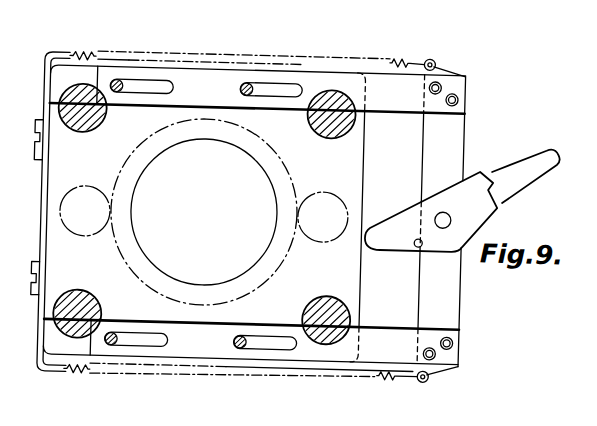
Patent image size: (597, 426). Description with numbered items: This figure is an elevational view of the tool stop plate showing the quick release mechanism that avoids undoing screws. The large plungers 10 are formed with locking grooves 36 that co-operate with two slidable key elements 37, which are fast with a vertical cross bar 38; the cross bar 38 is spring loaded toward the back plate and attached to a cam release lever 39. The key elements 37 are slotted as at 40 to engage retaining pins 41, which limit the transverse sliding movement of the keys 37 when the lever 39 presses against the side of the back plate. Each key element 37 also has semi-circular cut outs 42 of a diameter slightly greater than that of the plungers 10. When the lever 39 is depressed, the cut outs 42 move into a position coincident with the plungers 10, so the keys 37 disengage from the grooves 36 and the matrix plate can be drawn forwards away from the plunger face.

The large plungers 10 is at (69, 134).
The locking grooves 36 is at (77, 85).
The key elements 37 is at (200, 78).
The vertical cross bar 38 is at (456, 120).
The cam release lever 39 is at (522, 177).
The slots 40 is at (142, 94).
The retaining pins 41 is at (115, 84).
The semi-circular cut outs 42 is at (337, 88).